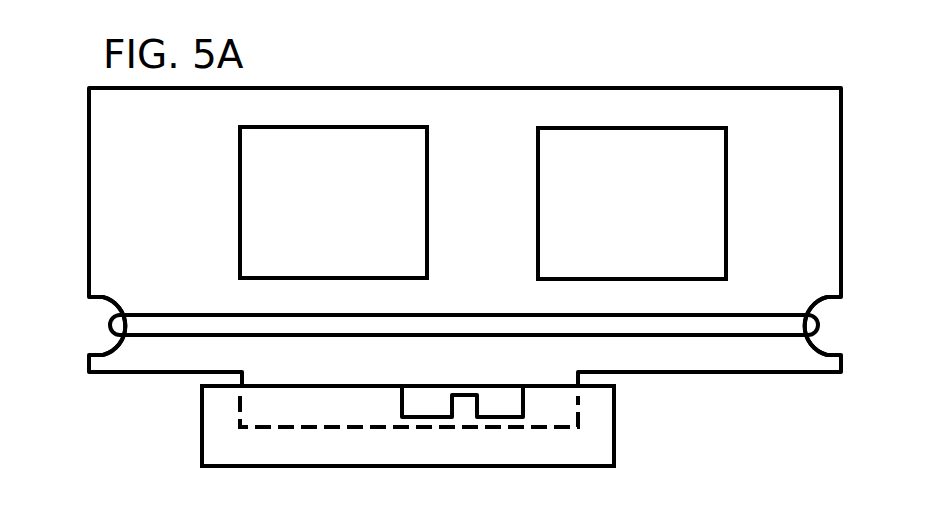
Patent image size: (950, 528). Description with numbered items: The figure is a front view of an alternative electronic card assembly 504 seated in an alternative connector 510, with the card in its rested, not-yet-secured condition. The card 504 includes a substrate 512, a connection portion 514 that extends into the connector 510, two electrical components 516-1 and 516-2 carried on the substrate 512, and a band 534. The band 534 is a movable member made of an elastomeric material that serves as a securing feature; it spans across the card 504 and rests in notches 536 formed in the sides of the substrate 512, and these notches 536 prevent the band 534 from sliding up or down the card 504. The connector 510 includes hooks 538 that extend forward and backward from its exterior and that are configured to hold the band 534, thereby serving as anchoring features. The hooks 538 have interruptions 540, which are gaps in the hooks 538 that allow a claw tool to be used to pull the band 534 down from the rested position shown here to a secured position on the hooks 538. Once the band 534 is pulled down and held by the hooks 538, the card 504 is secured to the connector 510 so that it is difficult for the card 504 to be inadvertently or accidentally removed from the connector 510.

The electronic card assembly 504 is at (540, 88).
The substrate 512 is at (653, 88).
The electrical component 516-1 is at (632, 203).
The electrical component 516-2 is at (333, 202).
The band 534 is at (715, 312).
The notches 536 is at (110, 305).
The connector 510 is at (201, 427).
The hooks 538 is at (402, 405).
The connection portion 514 is at (578, 408).
The interruptions 540 is at (455, 408).